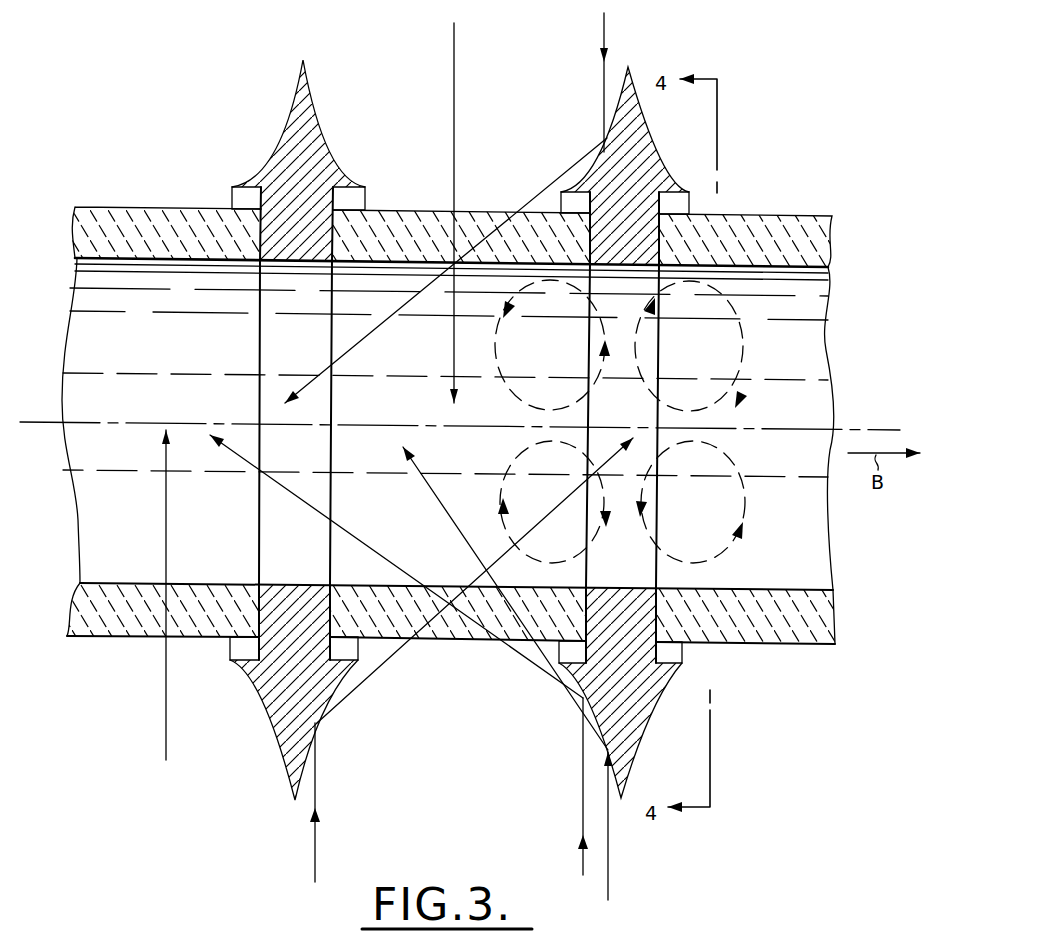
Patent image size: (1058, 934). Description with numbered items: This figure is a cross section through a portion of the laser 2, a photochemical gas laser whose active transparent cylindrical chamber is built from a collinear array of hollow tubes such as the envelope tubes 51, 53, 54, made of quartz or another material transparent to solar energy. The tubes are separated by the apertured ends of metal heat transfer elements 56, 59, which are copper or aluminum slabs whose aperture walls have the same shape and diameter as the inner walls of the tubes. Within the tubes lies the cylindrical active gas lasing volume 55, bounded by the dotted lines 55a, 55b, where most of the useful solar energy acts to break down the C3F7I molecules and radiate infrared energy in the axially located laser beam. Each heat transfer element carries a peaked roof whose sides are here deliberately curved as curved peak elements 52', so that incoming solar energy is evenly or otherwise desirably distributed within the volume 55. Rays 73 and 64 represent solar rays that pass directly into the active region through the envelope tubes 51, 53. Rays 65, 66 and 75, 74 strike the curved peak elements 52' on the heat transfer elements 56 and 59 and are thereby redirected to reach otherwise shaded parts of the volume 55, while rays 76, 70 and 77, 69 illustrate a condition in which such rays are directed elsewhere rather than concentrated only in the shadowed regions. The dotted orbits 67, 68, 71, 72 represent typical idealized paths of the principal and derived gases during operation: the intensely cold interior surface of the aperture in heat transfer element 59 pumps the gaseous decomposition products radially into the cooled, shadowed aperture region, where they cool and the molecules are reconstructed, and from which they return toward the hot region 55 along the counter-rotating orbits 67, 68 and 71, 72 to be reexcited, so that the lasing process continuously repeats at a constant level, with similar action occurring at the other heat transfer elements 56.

The laser 2 is at (511, 152).
The envelope tube 51 is at (122, 207).
The curved peak element 52' is at (305, 160).
The envelope tube 53 is at (402, 210).
The envelope tube 54 is at (772, 216).
The active gas lasing volume 55 is at (817, 404).
The dotted line 55a is at (155, 372).
The dotted line 55b is at (150, 477).
The heat transfer element 56 is at (275, 540).
The heat transfer element 59 is at (632, 573).
The ray 64 is at (455, 50).
The ray 65 is at (605, 30).
The ray 66 is at (388, 325).
The dotted orbit 67 is at (523, 284).
The dotted orbit 68 is at (745, 310).
The ray 69 is at (420, 466).
The ray 70 is at (360, 545).
The dotted orbit 71 is at (500, 518).
The dotted orbit 72 is at (746, 522).
The ray 73 is at (165, 692).
The ray 74 is at (390, 666).
The ray 75 is at (316, 850).
The ray 76 is at (582, 810).
The ray 77 is at (608, 862).